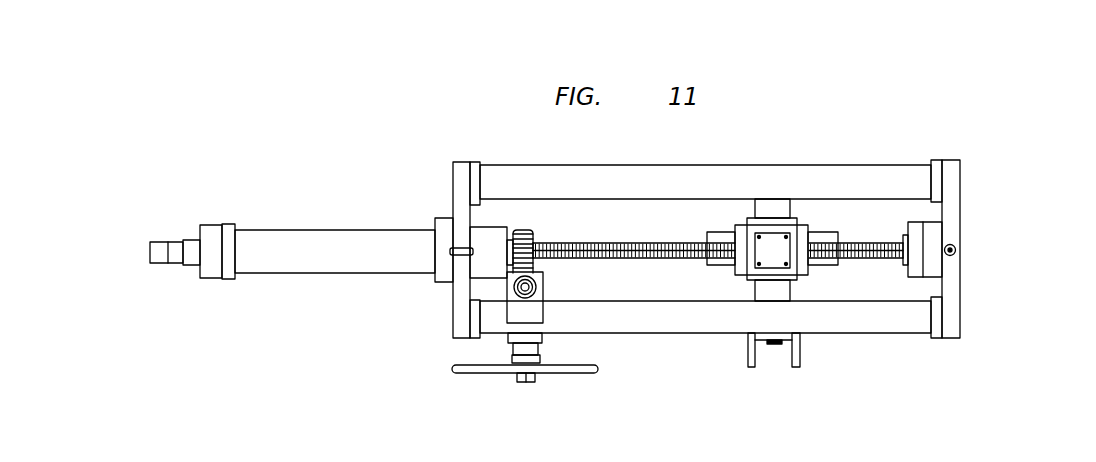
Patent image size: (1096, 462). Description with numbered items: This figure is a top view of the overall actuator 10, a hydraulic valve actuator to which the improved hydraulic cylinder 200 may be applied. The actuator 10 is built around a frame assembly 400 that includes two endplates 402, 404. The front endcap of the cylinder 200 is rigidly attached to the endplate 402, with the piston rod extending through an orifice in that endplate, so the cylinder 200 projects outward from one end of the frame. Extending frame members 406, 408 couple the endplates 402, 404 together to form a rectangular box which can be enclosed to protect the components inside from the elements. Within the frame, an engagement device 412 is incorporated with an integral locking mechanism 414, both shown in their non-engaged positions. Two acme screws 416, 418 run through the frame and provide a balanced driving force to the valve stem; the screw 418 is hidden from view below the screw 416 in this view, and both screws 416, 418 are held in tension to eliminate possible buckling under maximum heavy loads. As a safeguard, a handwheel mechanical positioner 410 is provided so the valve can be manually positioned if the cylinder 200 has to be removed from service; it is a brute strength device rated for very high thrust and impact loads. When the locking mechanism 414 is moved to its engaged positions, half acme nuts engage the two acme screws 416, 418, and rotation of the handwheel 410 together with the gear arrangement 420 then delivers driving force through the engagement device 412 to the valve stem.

The actuator 10 is at (878, 124).
The cylinder 200 is at (310, 228).
The frame assembly 400 is at (880, 335).
The endplate 402 is at (453, 322).
The endplate 404 is at (960, 320).
The extending frame member 406 is at (583, 168).
The extending frame member 408 is at (650, 328).
The handwheel mechanical positioner 410 is at (485, 375).
The engagement device 412 is at (773, 205).
The locking mechanism 414 is at (802, 358).
The acme screw 416 is at (643, 240).
The acme screw 418 is at (718, 229).
The gear arrangement 420 is at (527, 232).